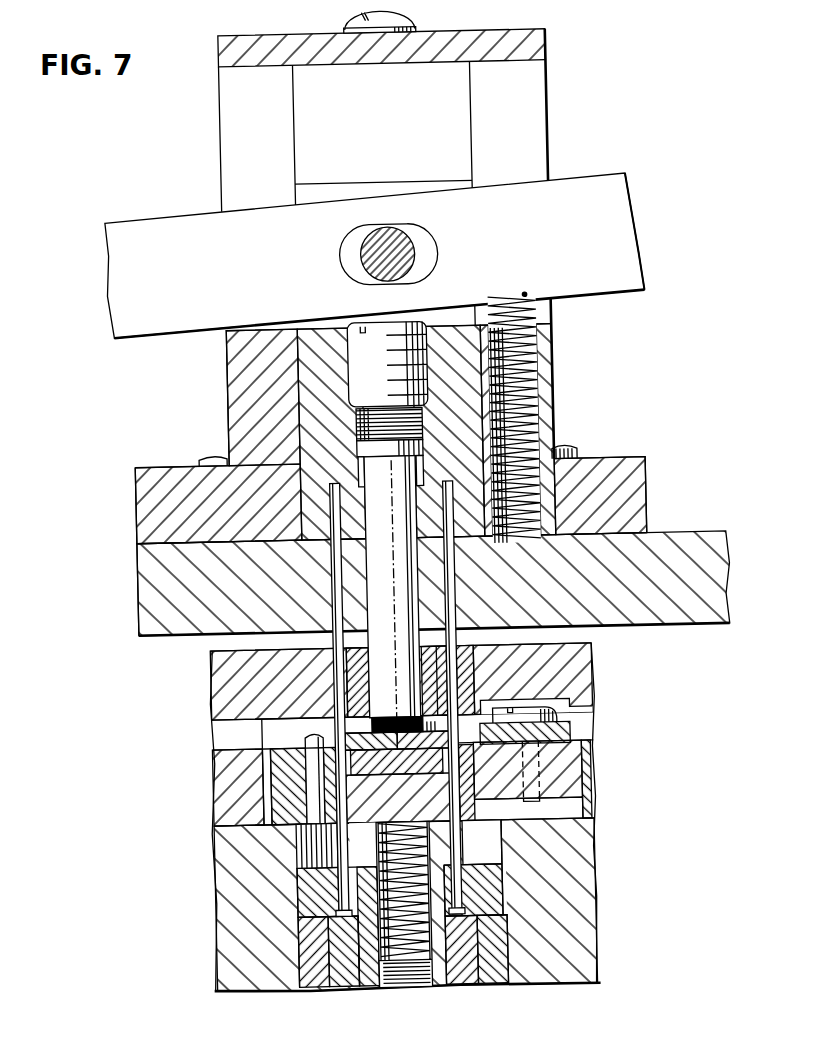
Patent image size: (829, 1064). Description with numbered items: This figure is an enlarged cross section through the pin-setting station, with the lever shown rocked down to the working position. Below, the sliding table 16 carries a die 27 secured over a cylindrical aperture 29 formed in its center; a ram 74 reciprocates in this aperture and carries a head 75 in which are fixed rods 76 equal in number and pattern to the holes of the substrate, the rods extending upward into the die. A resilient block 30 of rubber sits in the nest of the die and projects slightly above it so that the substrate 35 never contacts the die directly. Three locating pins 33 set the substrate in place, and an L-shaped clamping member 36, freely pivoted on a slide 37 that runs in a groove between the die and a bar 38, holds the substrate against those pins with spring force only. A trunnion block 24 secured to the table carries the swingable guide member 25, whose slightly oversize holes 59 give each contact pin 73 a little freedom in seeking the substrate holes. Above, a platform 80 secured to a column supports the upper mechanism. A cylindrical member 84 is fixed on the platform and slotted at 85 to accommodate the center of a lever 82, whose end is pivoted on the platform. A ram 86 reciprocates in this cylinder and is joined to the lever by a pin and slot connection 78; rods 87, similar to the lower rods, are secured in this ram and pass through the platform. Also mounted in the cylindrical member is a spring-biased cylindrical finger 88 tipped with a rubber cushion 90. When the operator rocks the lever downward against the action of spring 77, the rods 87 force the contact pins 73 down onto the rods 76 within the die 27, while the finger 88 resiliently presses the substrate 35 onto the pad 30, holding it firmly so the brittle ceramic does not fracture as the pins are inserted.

The table 16 is at (579, 871).
The trunnion block 24 is at (209, 774).
The guide member 25 is at (579, 687).
The die 27 is at (356, 807).
The cylindrical aperture 29 is at (494, 849).
The resilient block 30 is at (391, 767).
The locating pins 33 is at (304, 768).
The substrate 35 is at (322, 738).
The clamping member 36 is at (563, 735).
The slide 37 is at (499, 784).
The bar 38 is at (587, 781).
The guide holes 59 is at (458, 679).
The contact pin 73 is at (449, 771).
The ram 74 is at (472, 975).
The head 75 is at (430, 878).
The rods 76 is at (455, 839).
The spring 77 is at (532, 435).
The pin and slot connection 78 is at (382, 262).
The platform 80 is at (676, 541).
The lever 82 is at (628, 238).
The cylindrical member 84 is at (564, 389).
The slot 85 is at (548, 143).
The ram 86 is at (337, 185).
The rods 87 is at (445, 639).
The finger 88 is at (373, 609).
The rubber cushion 90 is at (388, 717).